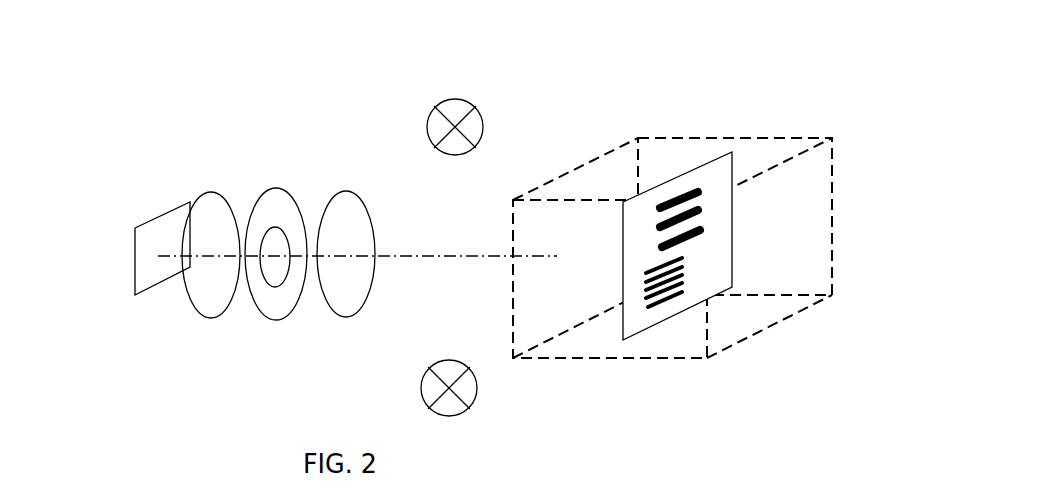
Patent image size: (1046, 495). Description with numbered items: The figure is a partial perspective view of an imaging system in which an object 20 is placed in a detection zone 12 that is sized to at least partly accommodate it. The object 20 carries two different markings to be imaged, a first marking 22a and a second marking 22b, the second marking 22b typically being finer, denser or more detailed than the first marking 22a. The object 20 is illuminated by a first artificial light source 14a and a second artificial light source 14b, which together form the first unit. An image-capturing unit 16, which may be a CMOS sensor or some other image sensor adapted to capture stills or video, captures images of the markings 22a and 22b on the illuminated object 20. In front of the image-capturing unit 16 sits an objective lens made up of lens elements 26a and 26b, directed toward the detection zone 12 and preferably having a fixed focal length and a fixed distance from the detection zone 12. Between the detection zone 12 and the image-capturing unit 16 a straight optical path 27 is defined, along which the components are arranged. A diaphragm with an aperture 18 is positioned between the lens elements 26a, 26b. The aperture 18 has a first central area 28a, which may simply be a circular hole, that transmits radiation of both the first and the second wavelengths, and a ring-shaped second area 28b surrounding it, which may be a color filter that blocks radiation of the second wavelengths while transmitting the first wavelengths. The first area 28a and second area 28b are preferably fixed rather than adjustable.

The detection zone 12 is at (675, 264).
The first artificial light source 14a is at (498, 96).
The second artificial light source 14b is at (504, 388).
The image-capturing unit 16 is at (134, 284).
The aperture 18 is at (315, 223).
The object 20 is at (690, 223).
The first marking 22a is at (641, 172).
The second marking 22b is at (703, 338).
The lens element 26a is at (193, 297).
The lens element 26b is at (385, 268).
The optical path 27 is at (357, 234).
The first central area 28a is at (301, 292).
The second area 28b is at (290, 346).